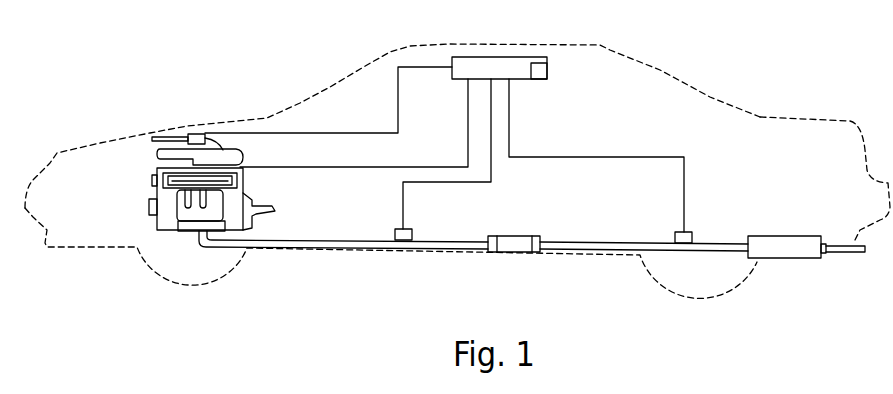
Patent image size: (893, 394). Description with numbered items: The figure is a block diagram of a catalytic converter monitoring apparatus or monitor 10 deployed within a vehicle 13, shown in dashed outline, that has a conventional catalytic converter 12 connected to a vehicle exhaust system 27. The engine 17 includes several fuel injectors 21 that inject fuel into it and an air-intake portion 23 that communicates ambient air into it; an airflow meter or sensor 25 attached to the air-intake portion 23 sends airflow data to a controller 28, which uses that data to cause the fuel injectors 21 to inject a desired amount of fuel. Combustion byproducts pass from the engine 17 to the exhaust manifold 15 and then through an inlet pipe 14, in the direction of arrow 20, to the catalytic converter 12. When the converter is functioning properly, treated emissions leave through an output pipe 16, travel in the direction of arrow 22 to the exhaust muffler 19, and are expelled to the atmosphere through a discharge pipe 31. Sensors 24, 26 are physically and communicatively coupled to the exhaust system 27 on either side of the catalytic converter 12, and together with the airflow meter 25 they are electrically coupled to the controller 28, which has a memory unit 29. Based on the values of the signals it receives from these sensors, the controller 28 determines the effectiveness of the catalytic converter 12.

The catalytic converter monitoring apparatus 10 is at (707, 65).
The catalytic converter 12 is at (519, 235).
The vehicle 13 is at (768, 115).
The inlet pipe 14 is at (460, 239).
The exhaust manifold 15 is at (222, 206).
The output pipe 16 is at (632, 243).
The engine 17 is at (160, 219).
The exhaust muffler 19 is at (782, 236).
The arrow 20 is at (340, 227).
The fuel injectors 21 is at (243, 155).
The arrow 22 is at (590, 229).
The air-intake portion 23 is at (173, 135).
The sensor 24 is at (396, 231).
The airflow meter 25 is at (197, 134).
The sensor 26 is at (692, 235).
The vehicle exhaust system 27 is at (808, 270).
The controller 28 is at (463, 79).
The memory unit 29 is at (547, 72).
The discharge pipe 31 is at (855, 245).